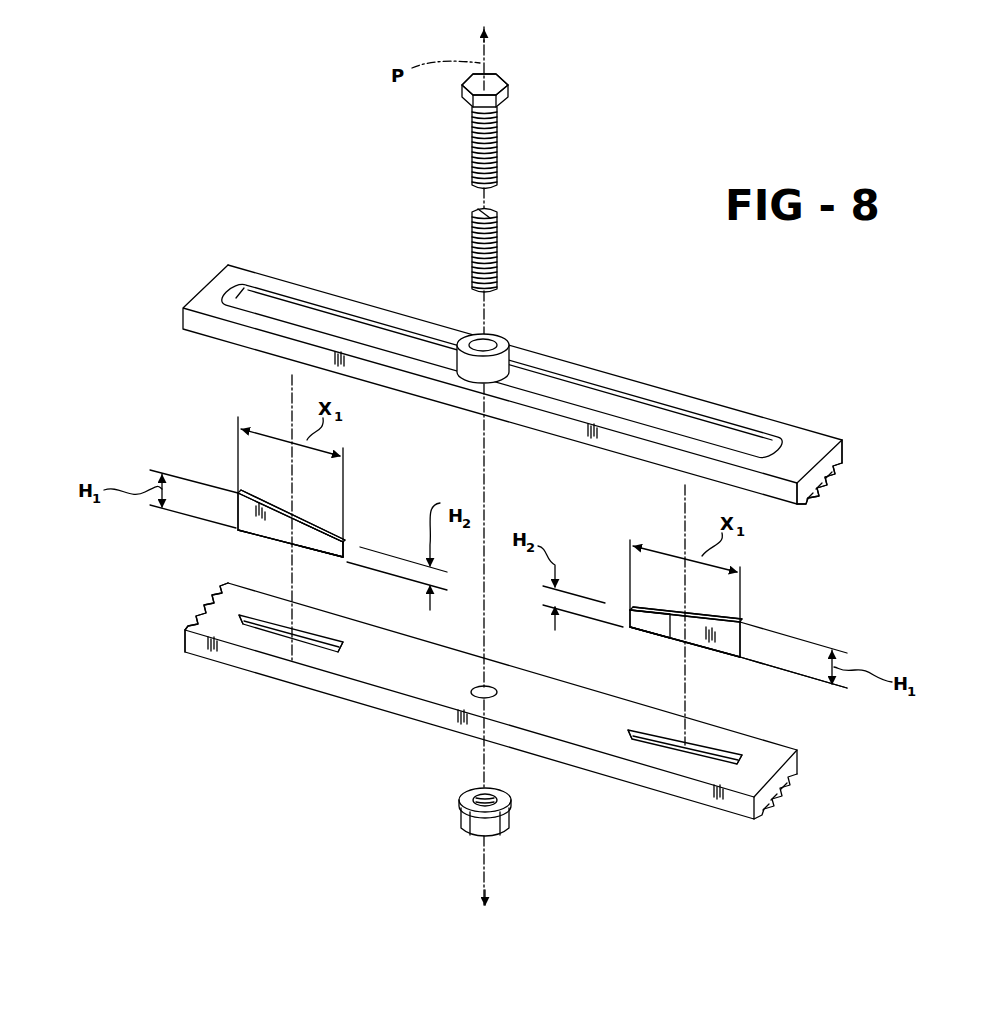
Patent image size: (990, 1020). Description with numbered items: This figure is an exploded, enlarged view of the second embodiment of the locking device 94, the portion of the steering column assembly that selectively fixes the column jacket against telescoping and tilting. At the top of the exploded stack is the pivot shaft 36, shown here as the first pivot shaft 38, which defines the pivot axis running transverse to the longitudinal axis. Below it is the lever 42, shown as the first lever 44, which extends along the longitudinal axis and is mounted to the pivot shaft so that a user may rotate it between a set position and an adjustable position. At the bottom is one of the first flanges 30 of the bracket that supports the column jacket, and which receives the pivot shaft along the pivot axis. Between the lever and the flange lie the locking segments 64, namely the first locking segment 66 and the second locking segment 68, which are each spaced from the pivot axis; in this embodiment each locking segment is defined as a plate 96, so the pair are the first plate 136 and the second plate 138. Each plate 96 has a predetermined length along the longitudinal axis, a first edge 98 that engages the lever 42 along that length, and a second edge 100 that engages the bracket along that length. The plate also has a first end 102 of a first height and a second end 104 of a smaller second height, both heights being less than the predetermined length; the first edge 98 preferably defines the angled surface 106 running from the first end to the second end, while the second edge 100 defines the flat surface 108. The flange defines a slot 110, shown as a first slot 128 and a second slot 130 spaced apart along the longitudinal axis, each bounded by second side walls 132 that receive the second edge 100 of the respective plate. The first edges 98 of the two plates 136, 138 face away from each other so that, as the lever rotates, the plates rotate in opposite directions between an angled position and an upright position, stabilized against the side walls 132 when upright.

The first flanges 30 is at (400, 707).
The pivot shaft 36 is at (565, 68).
The first pivot shaft 38 is at (498, 149).
The lever 42 is at (496, 331).
The first lever 44 is at (215, 296).
The locking segment 64 is at (768, 597).
The first locking segment 66 is at (152, 454).
The second locking segment 68 is at (812, 699).
The locking device 94 is at (898, 404).
The plate 96 is at (406, 490).
The first edge 98 is at (250, 494).
The second edge 100 is at (275, 545).
The first end 102 is at (237, 509).
The second end 104 is at (343, 540).
The angled surface 106 is at (322, 520).
The flat surface 108 is at (240, 532).
The slot 110 is at (178, 673).
The first slot 128 is at (308, 650).
The second slot 130 is at (655, 745).
The second side walls 132 is at (345, 648).
The first plate 136 is at (318, 548).
The second plate 138 is at (645, 625).